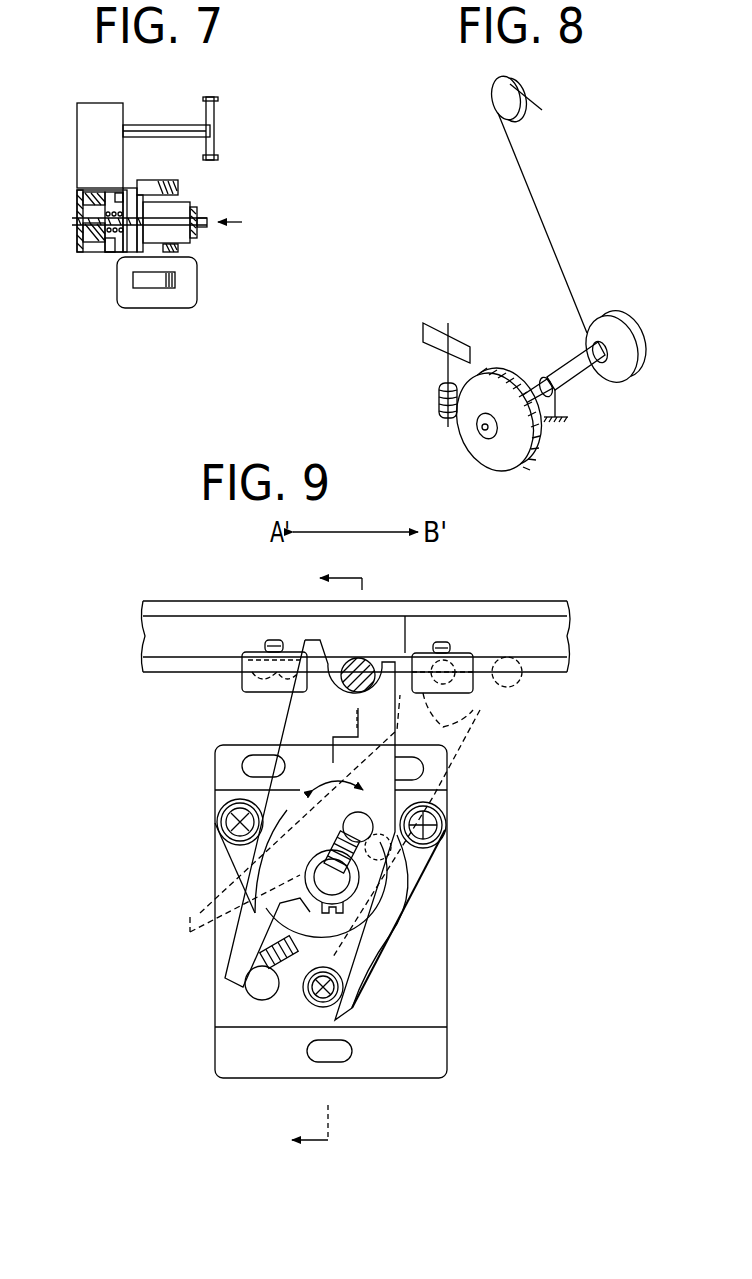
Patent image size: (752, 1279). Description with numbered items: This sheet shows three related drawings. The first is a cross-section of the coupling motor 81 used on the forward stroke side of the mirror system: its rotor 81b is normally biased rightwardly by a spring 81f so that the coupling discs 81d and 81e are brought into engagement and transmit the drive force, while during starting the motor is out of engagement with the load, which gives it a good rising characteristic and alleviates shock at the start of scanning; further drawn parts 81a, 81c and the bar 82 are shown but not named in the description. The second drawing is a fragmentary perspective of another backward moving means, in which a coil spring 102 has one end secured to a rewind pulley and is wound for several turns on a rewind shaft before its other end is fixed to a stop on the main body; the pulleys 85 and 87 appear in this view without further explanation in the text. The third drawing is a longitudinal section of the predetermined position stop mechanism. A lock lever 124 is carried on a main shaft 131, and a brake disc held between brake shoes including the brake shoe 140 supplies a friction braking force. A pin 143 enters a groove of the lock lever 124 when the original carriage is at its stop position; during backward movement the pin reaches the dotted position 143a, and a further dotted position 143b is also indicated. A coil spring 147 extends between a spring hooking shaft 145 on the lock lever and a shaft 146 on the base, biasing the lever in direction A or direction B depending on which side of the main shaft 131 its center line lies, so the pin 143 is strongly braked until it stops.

In FIG. 7, the coupling motor 81 is at (87, 167).
In FIG. 7, the bearing block 81a is at (148, 187).
In FIG. 7, the rotor 81b is at (180, 205).
In FIG. 7, the shaft end 81c is at (202, 230).
In FIG. 7, the coupling disc 81d is at (118, 192).
In FIG. 7, the coupling disc 81e is at (107, 252).
In FIG. 7, the spring 81f is at (111, 253).
In FIG. 7, the support bar 82 is at (168, 129).
In FIG. 8, the pulley 85 is at (495, 97).
In FIG. 8, the drive pulley 87 is at (624, 325).
In FIG. 8, the coil spring 102 is at (560, 404).
In FIG. 9, the lock lever 124 is at (312, 642).
In FIG. 9, the main shaft 131 is at (332, 888).
In FIG. 9, the brake shoe 140 is at (413, 905).
In FIG. 9, the pin 143 is at (362, 655).
In FIG. 9, the dotted-line position of pin 143a is at (440, 640).
In FIG. 9, the alternate pin position 143b is at (502, 657).
In FIG. 9, the spring hooking shaft 145 is at (355, 813).
In FIG. 9, the shaft 146 is at (262, 1000).
In FIG. 9, the coil spring 147 is at (245, 960).